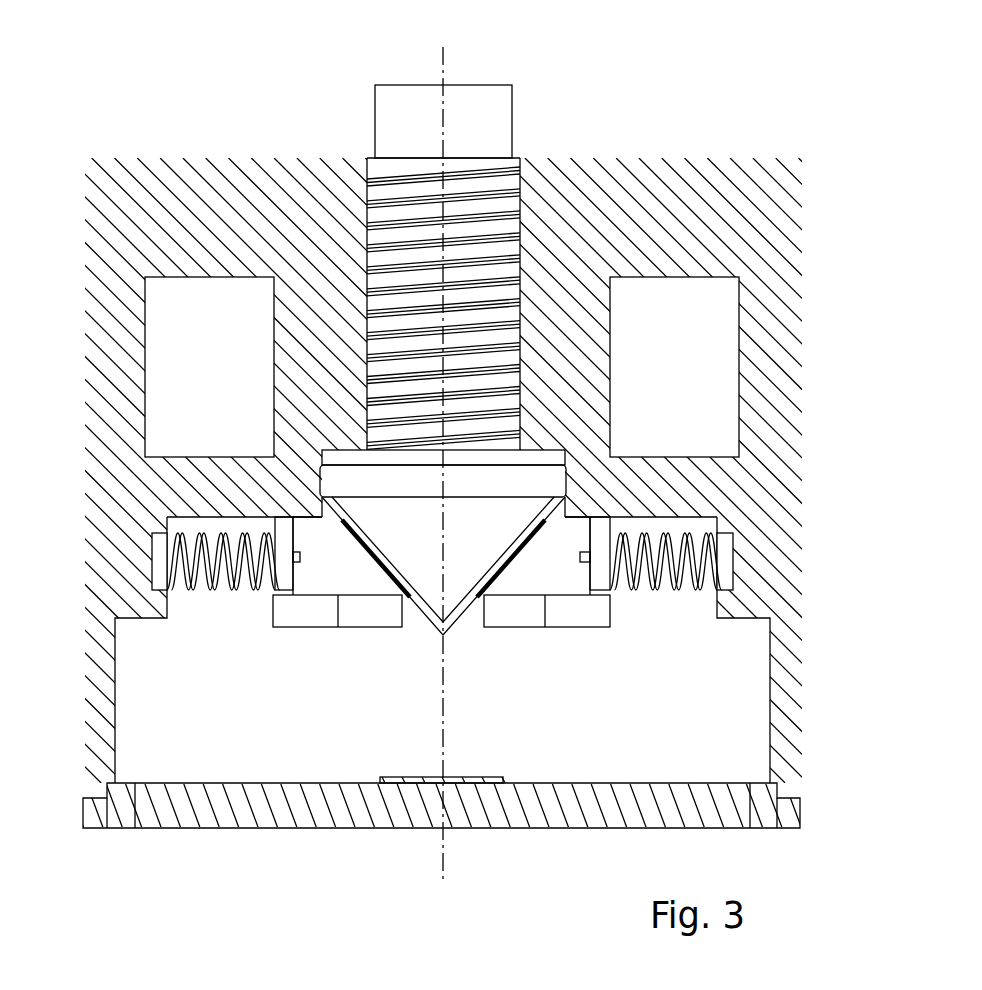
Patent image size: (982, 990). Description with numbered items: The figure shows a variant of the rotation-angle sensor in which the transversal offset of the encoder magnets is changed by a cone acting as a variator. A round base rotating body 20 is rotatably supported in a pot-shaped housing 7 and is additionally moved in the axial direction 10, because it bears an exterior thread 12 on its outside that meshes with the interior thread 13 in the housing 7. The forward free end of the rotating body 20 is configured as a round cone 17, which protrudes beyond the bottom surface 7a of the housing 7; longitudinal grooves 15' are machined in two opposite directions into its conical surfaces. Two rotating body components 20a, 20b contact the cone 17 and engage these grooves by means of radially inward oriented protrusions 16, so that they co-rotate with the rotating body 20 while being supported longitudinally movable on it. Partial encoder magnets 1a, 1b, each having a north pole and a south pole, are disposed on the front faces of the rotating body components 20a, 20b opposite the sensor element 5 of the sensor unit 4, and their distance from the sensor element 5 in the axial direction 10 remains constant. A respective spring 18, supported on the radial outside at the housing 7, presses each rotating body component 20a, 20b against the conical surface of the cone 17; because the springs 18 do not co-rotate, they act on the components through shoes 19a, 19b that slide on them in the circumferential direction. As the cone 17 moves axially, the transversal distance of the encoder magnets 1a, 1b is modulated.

The encoder magnet component 1a is at (328, 626).
The encoder magnet component 1b is at (540, 626).
The sensor unit 4 is at (310, 810).
The sensor element 5 is at (423, 780).
The housing 7 is at (491, 470).
The bottom surface 7a is at (665, 517).
The axial direction 10 is at (445, 62).
The exterior thread 12 is at (367, 418).
The interior thread 13 is at (520, 198).
The longitudinal groove 15' is at (443, 552).
The protrusion 16 is at (397, 580).
The cone 17 is at (443, 542).
The spring 18 is at (150, 553).
The shoe 19a is at (275, 582).
The shoe 19b is at (612, 590).
The base rotating body 20 is at (410, 85).
The rotating body component 20a is at (327, 556).
The rotating body component 20b is at (557, 556).